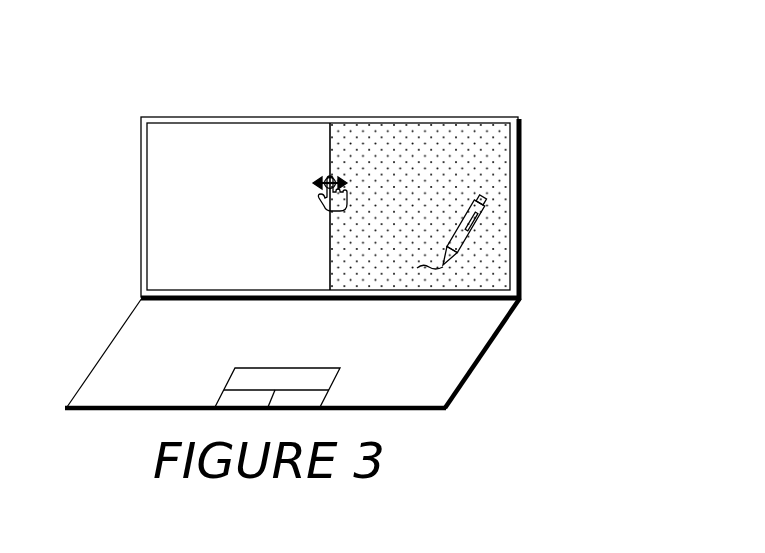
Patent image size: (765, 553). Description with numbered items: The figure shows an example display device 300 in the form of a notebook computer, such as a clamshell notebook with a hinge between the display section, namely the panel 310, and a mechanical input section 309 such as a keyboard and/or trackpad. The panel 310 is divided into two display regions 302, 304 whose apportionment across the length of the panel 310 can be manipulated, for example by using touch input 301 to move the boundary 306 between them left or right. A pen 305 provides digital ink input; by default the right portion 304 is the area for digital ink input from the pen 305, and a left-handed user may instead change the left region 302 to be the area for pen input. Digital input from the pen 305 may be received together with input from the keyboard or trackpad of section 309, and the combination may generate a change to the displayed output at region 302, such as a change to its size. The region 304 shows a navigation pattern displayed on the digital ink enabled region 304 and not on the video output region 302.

The display device 300 is at (384, 72).
The touch input 301 is at (335, 178).
The left display region 302 is at (205, 279).
The right display region 304 is at (390, 279).
The pen 305 is at (472, 232).
The boundary 306 is at (330, 121).
The mechanical input section 309 is at (150, 388).
The panel 310 is at (185, 122).